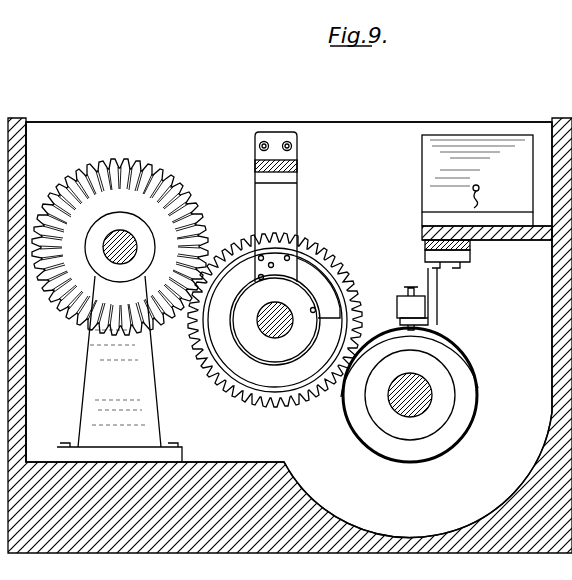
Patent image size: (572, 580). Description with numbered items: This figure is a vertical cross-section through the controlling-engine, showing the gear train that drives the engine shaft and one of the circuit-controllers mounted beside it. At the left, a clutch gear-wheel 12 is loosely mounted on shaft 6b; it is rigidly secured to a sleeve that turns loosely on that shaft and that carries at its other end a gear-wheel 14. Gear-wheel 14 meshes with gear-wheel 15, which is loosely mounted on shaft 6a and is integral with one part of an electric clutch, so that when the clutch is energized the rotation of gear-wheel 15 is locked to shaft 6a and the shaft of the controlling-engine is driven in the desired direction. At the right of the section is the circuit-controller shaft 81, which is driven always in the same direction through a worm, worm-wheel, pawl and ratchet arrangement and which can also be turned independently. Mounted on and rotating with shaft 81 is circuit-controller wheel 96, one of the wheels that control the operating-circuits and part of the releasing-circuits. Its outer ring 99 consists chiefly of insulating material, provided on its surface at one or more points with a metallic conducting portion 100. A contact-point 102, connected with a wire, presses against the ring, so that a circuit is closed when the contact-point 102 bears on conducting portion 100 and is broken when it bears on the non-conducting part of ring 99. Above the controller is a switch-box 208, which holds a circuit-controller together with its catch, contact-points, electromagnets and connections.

The clutch gear-wheel 12 is at (143, 170).
The gear-wheel 14 is at (182, 191).
The shaft 6b is at (121, 229).
The gear-wheel 15 is at (223, 246).
The shaft 6a is at (278, 338).
The switch-box 208 is at (516, 141).
The circuit-controller wheel 96 is at (470, 405).
The ring 99 is at (467, 369).
The circuit-controller shaft 81 is at (426, 400).
The conducting portion 100 is at (399, 335).
The contact-point 102 is at (438, 323).